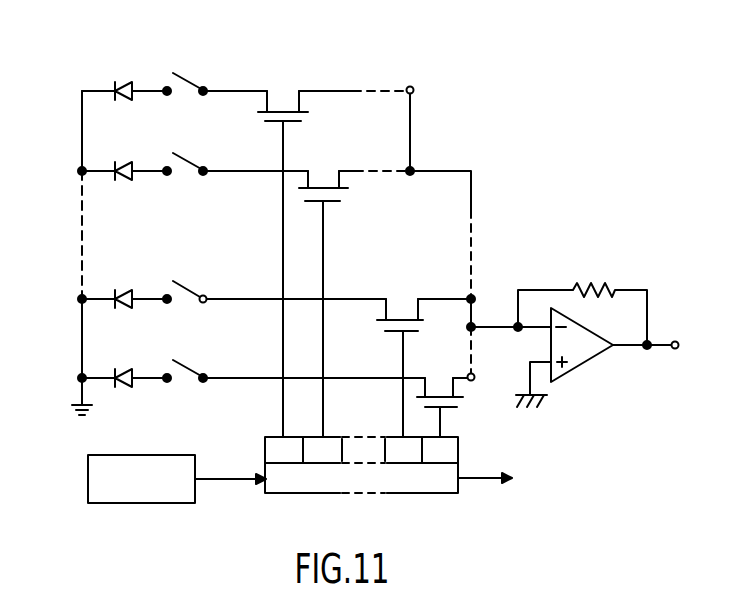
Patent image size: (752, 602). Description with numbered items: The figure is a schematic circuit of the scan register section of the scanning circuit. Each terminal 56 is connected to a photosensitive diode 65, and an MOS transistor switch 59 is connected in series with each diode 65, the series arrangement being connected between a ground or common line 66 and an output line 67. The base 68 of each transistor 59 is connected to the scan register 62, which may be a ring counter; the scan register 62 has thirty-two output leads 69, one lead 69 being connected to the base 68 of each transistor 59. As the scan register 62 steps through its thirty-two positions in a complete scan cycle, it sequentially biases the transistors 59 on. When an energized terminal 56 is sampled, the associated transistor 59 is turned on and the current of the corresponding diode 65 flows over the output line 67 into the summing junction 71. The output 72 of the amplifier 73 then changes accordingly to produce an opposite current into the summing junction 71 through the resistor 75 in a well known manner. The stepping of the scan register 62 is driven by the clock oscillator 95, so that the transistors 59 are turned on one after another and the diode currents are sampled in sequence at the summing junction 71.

The terminal 56 is at (183, 76).
The MOS transistor switch 59 is at (334, 203).
The scan register 62 is at (400, 459).
The photosensitive diode 65 is at (122, 84).
The ground or common line 66 is at (82, 335).
The output line 67 is at (449, 172).
The base 68 is at (360, 249).
The output leads 69 is at (283, 403).
The summing junction 71 is at (516, 325).
The output 72 is at (672, 352).
The amplifier 73 is at (587, 362).
The resistor 75 is at (590, 288).
The clock oscillator 95 is at (172, 503).